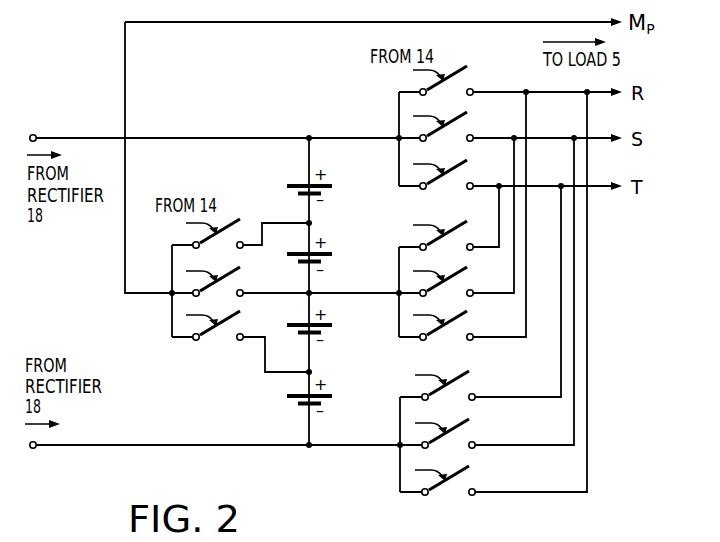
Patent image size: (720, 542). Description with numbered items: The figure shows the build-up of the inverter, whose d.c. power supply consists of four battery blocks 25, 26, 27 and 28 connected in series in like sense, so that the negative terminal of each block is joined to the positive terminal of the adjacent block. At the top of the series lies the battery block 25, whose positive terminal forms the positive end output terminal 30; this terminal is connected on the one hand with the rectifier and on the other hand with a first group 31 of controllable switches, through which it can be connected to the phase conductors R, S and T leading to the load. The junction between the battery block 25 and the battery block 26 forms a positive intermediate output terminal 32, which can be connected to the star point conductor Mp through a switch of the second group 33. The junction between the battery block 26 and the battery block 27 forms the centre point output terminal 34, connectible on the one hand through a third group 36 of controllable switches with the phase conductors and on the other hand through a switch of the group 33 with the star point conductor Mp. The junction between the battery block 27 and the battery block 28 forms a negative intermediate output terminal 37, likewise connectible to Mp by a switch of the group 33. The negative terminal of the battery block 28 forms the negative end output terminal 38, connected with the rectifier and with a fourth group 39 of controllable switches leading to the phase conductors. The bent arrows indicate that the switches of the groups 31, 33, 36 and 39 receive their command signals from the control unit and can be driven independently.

The battery block 25 is at (333, 185).
The battery block 26 is at (333, 253).
The battery block 27 is at (331, 324).
The battery block 28 is at (334, 396).
The positive end output terminal 30 is at (307, 136).
The first group of controllable switches 31 is at (392, 112).
The positive intermediate output terminal 32 is at (311, 222).
The second group of controllable switches 33 is at (166, 315).
The centre point output terminal 34 is at (311, 292).
The third group of controllable switches 36 is at (391, 256).
The negative intermediate output terminal 37 is at (311, 371).
The negative end output terminal 38 is at (311, 444).
The fourth group of controllable switches 39 is at (392, 406).